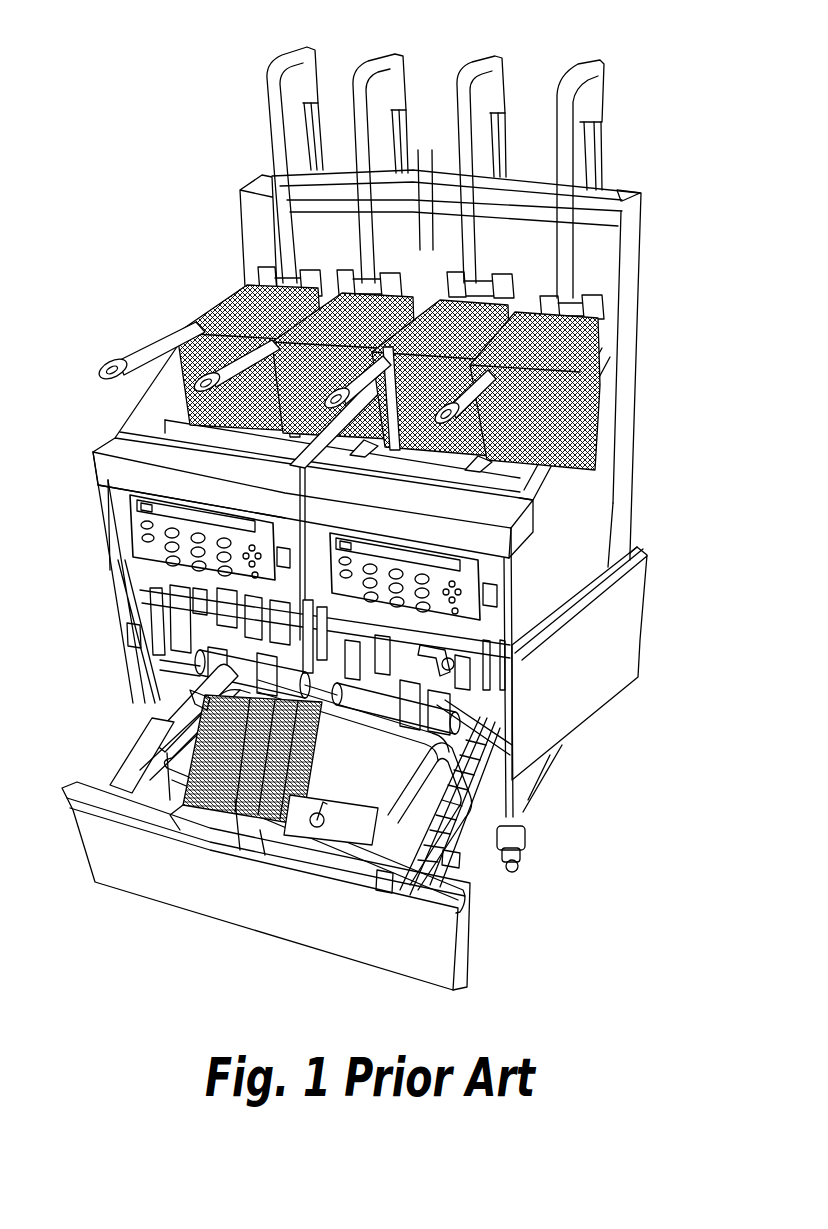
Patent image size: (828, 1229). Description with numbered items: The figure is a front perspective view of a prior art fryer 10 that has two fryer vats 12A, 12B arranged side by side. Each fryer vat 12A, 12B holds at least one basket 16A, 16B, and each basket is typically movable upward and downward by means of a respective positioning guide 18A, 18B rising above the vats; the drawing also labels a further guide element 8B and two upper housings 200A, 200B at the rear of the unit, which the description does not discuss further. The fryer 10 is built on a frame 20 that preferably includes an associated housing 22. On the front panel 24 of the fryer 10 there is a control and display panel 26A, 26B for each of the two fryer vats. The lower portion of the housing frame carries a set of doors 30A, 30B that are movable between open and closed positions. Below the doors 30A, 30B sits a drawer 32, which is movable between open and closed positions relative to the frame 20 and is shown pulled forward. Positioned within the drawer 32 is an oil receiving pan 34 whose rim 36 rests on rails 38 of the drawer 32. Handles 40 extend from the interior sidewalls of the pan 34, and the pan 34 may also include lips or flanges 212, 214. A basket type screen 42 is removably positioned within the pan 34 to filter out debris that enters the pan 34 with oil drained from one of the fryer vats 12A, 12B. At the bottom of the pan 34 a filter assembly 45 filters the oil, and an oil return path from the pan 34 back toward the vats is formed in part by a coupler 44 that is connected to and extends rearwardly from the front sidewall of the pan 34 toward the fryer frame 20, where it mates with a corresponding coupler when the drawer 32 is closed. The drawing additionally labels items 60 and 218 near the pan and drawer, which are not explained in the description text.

The fryer 10 is at (112, 118).
The positioning guide 18A is at (288, 55).
The positioning guide 18B is at (492, 70).
The basket lift handle 8B is at (585, 72).
The basket lift housing 200A is at (252, 188).
The basket lift housing 200B is at (636, 192).
The basket 16A is at (160, 353).
The basket 16B is at (565, 410).
The fryer vat 12A is at (142, 418).
The fryer vat 12B is at (530, 480).
The housing 22 is at (600, 526).
The front panel 24 is at (102, 506).
The control and display panel 26A is at (130, 530).
The control and display panel 26B is at (503, 576).
The door 30A is at (112, 576).
The door 30B is at (640, 648).
The frame 20 is at (140, 616).
The drawer 32 is at (75, 778).
The lip or flange 212 is at (148, 745).
The lip or flange 214 is at (415, 768).
The rails 38 is at (137, 750).
The rim 36 is at (140, 788).
The handles 40 is at (165, 828).
The basket type screen 42 is at (315, 738).
The coupler 44 is at (300, 782).
The filter assembly 45 is at (345, 812).
The oil receiving pan 34 is at (200, 833).
The pan bottom 60 is at (275, 832).
The drawer stop 218 is at (412, 885).